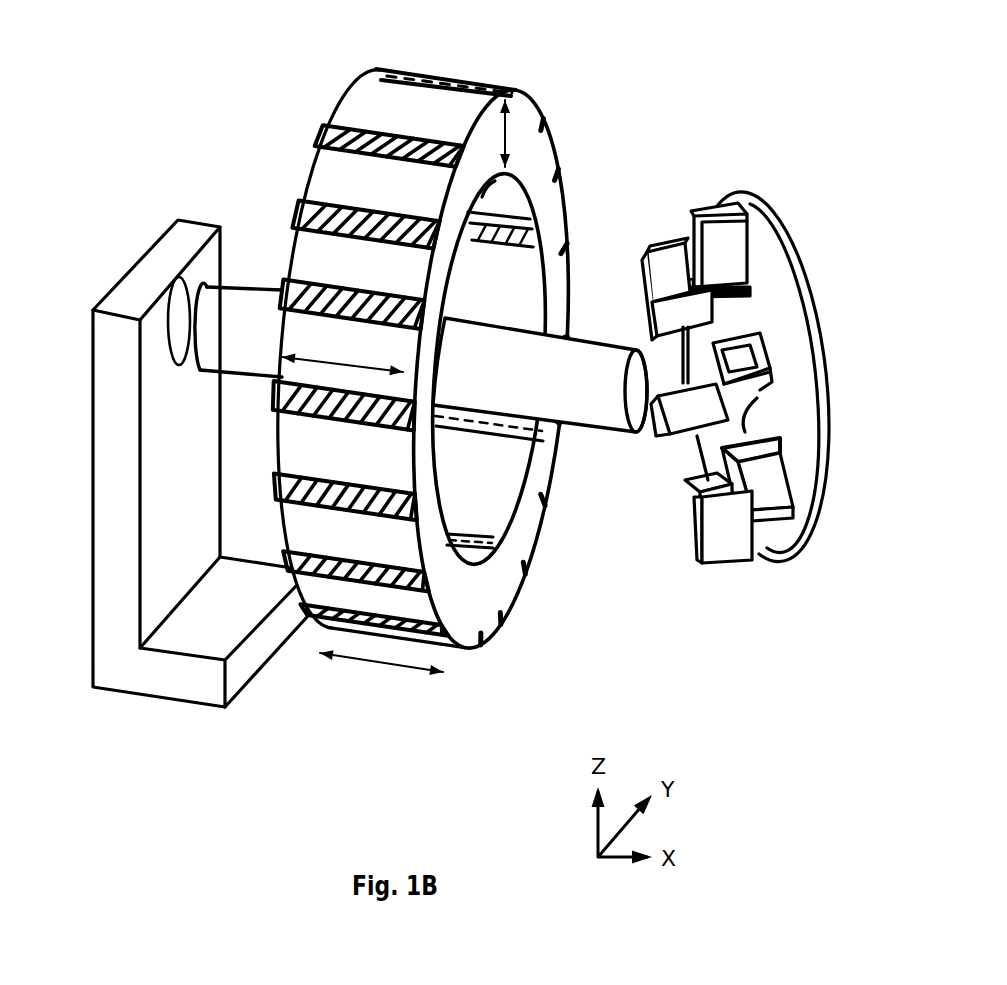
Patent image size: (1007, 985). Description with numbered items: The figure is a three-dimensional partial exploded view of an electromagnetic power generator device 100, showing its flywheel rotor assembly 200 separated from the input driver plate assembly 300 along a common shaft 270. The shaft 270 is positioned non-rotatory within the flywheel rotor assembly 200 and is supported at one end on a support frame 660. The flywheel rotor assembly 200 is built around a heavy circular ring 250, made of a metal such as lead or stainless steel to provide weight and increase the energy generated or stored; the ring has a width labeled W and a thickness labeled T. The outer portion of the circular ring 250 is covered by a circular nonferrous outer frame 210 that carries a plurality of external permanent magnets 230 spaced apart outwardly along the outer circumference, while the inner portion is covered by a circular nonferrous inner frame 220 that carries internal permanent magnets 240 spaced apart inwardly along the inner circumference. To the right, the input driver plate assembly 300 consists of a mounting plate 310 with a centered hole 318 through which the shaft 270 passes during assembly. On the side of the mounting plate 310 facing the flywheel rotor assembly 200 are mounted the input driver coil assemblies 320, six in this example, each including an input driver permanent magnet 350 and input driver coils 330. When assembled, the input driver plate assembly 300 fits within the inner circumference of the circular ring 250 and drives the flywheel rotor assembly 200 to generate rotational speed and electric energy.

The electromagnetic power generator device 100 is at (577, 68).
The flywheel rotor assembly 200 is at (542, 579).
The circular nonferrous outer frame 210 is at (358, 106).
The circular nonferrous inner frame 220 is at (492, 464).
The external permanent magnets 230 is at (320, 198).
The internal permanent magnets 240 is at (478, 234).
The circular ring 250 is at (497, 605).
The shaft 270 is at (570, 383).
The input driver plate assembly 300 is at (744, 152).
The mounting plate 310 is at (758, 200).
The centered hole 318 is at (747, 402).
The input driver coil assembly 320 is at (767, 298).
The input driver coils 330 is at (732, 552).
The input driver permanent magnet 350 is at (693, 488).
The support frame 660 is at (148, 222).